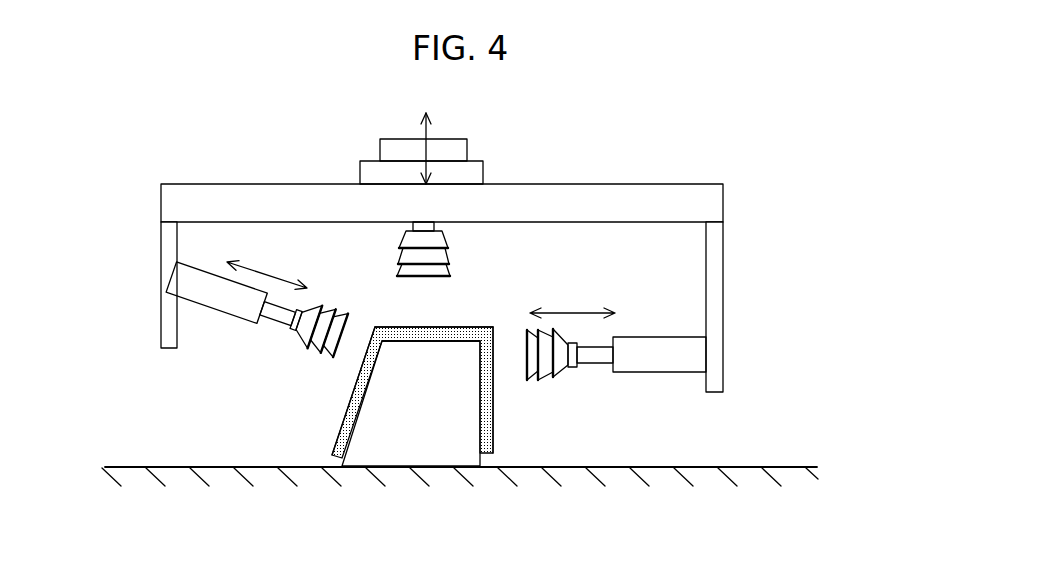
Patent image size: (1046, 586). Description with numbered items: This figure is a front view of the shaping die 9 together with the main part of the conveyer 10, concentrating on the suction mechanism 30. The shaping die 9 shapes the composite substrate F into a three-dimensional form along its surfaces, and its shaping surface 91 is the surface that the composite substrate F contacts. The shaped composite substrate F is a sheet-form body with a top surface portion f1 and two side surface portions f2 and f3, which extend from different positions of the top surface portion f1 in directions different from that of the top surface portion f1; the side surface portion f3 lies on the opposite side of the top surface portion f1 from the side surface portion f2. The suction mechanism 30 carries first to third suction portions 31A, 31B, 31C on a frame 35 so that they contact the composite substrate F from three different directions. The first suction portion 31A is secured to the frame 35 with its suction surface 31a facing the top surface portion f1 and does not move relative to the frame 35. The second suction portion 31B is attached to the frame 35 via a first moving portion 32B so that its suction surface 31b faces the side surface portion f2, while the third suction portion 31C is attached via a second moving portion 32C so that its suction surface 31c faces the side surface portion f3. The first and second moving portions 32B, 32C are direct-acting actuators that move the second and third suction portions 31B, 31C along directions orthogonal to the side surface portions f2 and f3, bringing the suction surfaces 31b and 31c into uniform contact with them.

The transfer system 10 is at (735, 141).
The suction mechanism 30 is at (180, 176).
The frame 35 is at (302, 202).
The first suction portion 31A is at (440, 258).
The suction surface 31a is at (412, 277).
The second suction portion 31B is at (330, 322).
The suction surface 31b is at (343, 323).
The first moving portion 32B is at (273, 313).
The third suction portion 31C is at (558, 377).
The suction surface 31c is at (528, 342).
The second moving portion 32C is at (600, 355).
The shaping die 9 is at (440, 468).
The shaping surface 91 is at (398, 334).
The composite substrate F is at (342, 428).
The top surface portion f1 is at (473, 323).
The side surface portion f2 is at (352, 392).
The side surface portion f3 is at (493, 399).